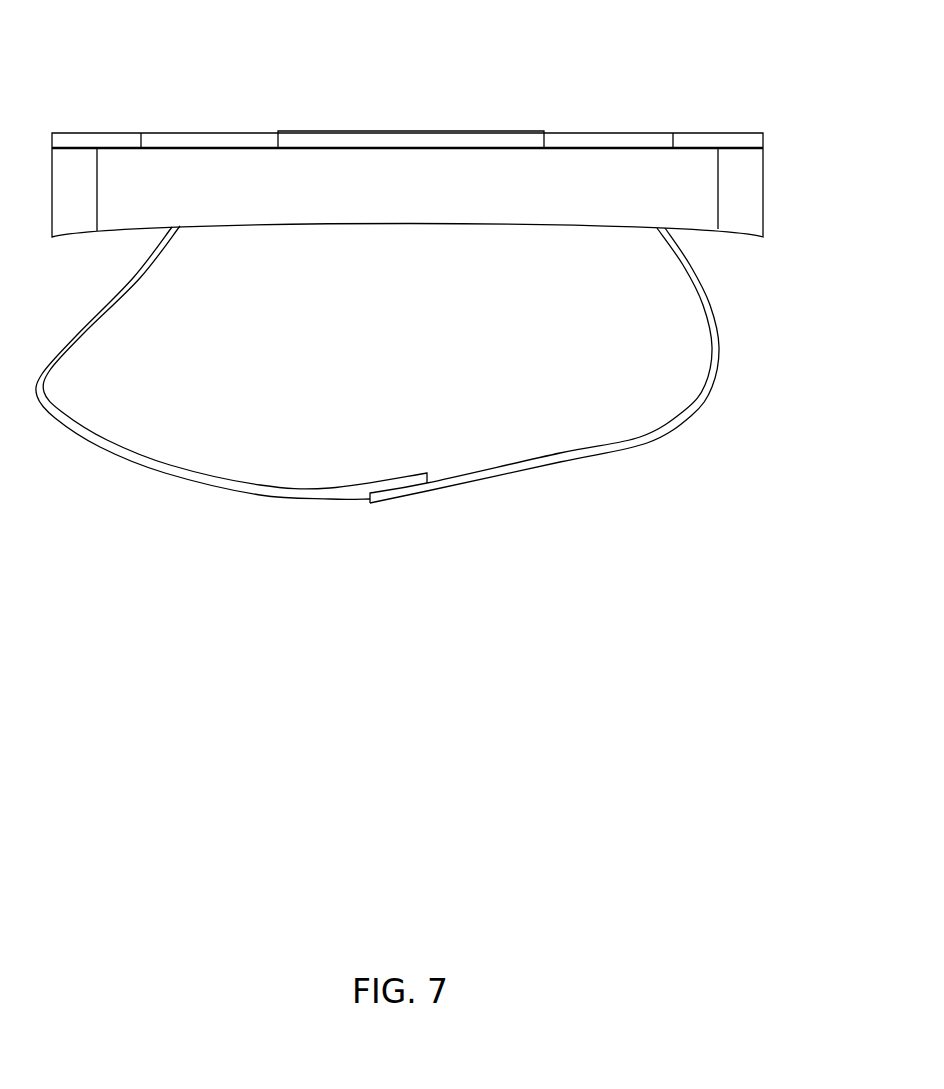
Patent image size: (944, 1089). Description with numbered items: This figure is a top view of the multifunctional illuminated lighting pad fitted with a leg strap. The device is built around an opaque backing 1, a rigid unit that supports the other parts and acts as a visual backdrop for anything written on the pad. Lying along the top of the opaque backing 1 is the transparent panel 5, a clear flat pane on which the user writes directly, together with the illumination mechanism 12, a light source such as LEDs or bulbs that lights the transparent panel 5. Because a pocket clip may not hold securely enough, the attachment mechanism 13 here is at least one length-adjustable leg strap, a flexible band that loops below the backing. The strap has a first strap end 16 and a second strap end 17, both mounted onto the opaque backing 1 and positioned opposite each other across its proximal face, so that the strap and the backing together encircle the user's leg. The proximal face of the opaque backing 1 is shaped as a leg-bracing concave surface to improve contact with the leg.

The transparent panel 5 is at (168, 55).
The opaque backing 1 is at (770, 257).
The illumination mechanism 12 is at (410, 143).
The attachment mechanism 13 is at (365, 607).
The first strap end 16 is at (659, 263).
The second strap end 17 is at (170, 263).